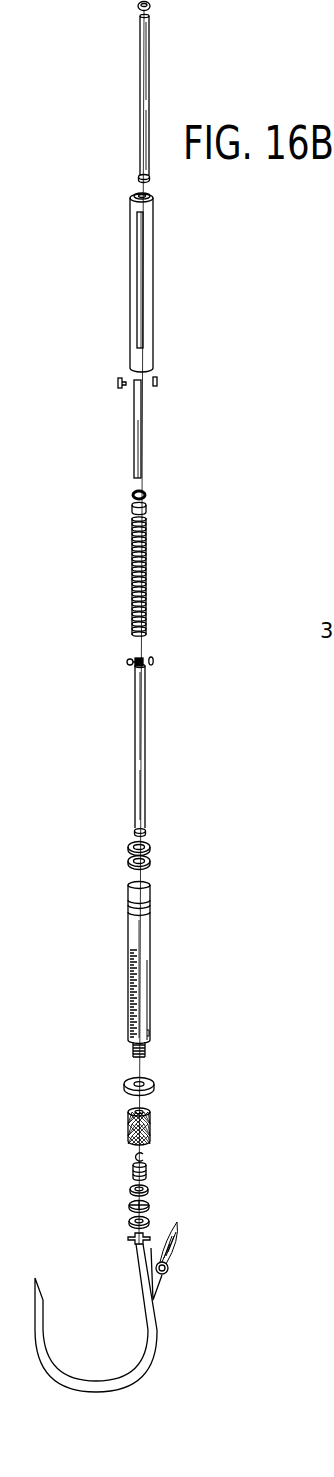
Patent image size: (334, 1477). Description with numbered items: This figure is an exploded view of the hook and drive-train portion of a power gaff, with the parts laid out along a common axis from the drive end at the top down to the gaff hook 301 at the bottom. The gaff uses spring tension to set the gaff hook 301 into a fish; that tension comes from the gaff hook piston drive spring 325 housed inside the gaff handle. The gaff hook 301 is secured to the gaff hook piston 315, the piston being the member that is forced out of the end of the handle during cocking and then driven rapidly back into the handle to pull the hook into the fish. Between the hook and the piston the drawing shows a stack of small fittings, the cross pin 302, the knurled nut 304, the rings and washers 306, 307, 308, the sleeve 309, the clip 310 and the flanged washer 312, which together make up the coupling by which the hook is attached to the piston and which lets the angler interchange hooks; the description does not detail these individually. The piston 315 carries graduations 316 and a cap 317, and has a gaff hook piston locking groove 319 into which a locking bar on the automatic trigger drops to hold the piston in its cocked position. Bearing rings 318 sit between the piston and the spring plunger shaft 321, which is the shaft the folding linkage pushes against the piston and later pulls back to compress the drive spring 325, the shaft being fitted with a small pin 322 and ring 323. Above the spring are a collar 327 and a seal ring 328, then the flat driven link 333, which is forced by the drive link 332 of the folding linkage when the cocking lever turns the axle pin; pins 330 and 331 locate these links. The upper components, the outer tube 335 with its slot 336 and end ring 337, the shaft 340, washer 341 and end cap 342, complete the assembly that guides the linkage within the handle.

The gaff hook 301 is at (42, 1328).
The cross pin 302 is at (134, 1238).
The knurled nut 304 is at (128, 1130).
The split ring 306 is at (129, 1222).
The slotted washer 307 is at (129, 1205).
The washer 308 is at (148, 1190).
The sleeve 309 is at (133, 1171).
The retaining clip 310 is at (146, 1158).
The flanged washer 312 is at (153, 1086).
The gaff hook piston 315 is at (135, 984).
The scale graduations 316 is at (128, 1010).
The barrel cap 317 is at (150, 898).
The bearing rings 318 is at (150, 847).
The gaff hook piston locking groove 319 is at (147, 963).
The spring plunger shaft 321 is at (135, 782).
The pin with ring 322 is at (132, 664).
The retaining ring 323 is at (152, 664).
The gaff hook piston drive spring 325 is at (132, 592).
The collar 327 is at (146, 507).
The ring seal 328 is at (133, 495).
The keying pin 330 is at (121, 390).
The stop pin 331 is at (157, 388).
The drive link 332 is at (174, 449).
The driven link 333 is at (136, 429).
The outer tube 335 is at (142, 283).
The slot 336 is at (154, 311).
The end ring 337 is at (151, 196).
The shaft 340 is at (150, 108).
The washer 341 is at (138, 178).
The end cap 342 is at (138, 7).